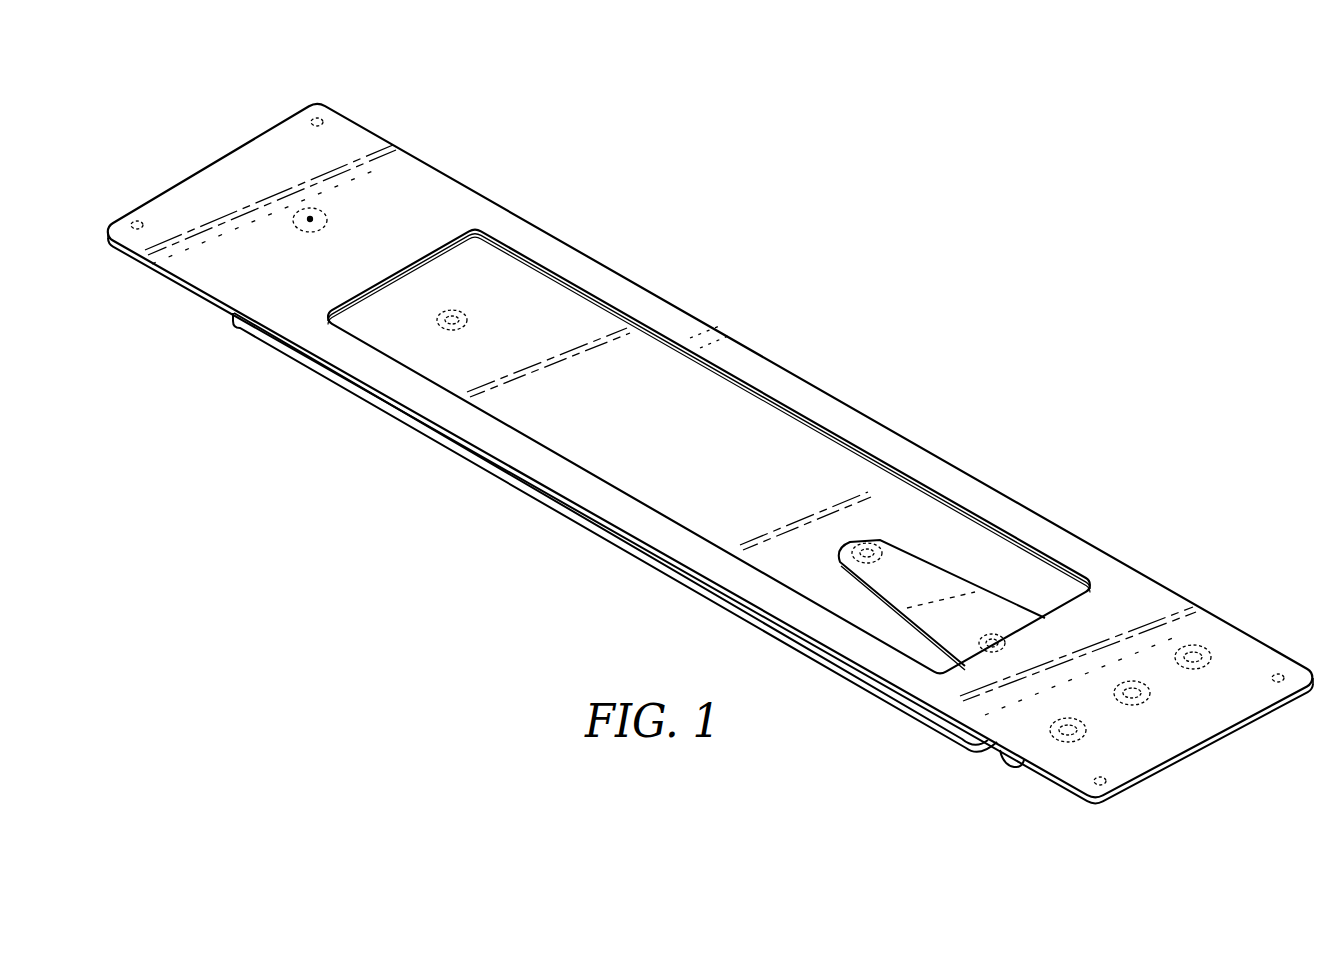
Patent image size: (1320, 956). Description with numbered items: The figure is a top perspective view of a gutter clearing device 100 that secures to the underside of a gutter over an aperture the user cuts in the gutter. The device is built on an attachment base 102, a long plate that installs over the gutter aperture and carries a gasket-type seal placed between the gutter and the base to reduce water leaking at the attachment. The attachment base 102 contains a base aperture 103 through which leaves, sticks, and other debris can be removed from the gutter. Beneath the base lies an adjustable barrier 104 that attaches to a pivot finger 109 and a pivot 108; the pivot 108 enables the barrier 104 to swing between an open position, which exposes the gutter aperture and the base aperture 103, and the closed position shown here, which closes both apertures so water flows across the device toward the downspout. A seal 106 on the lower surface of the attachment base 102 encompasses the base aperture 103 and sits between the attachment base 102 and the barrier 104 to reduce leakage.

The gutter clearing device 100 is at (487, 182).
The attachment base 102 is at (337, 127).
The base aperture 103 is at (580, 443).
The adjustable barrier 104 is at (630, 348).
The seal 106 is at (760, 385).
The pivot 108 is at (1003, 758).
The pivot finger 109 is at (920, 568).